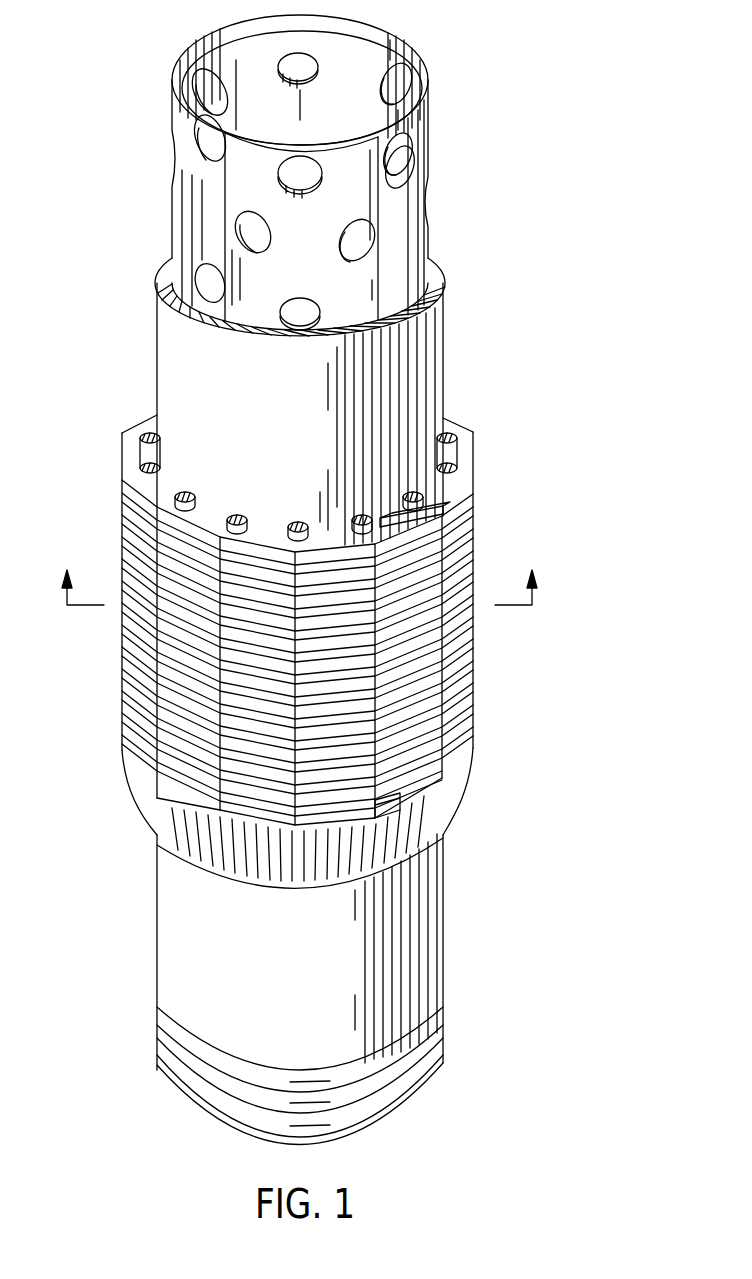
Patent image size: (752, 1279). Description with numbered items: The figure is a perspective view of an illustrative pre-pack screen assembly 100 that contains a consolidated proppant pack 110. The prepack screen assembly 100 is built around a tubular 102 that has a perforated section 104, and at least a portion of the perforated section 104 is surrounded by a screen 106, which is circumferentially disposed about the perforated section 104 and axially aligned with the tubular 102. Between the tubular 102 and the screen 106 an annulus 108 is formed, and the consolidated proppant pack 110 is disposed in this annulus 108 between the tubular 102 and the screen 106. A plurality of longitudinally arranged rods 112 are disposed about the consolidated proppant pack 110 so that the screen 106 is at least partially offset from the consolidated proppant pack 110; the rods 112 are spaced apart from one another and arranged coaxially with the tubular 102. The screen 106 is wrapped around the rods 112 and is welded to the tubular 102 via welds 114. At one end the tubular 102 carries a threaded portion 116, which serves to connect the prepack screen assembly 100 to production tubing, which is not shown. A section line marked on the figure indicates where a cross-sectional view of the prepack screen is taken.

The prepack screen assembly 100 is at (524, 108).
The tubular 102 is at (178, 945).
The perforated section 104 is at (180, 203).
The screen 106 is at (150, 412).
The annulus 108 is at (422, 358).
The consolidated proppant pack 110 is at (142, 330).
The rods 112 is at (143, 466).
The welds 114 is at (162, 807).
The threaded portion 116 is at (443, 1040).